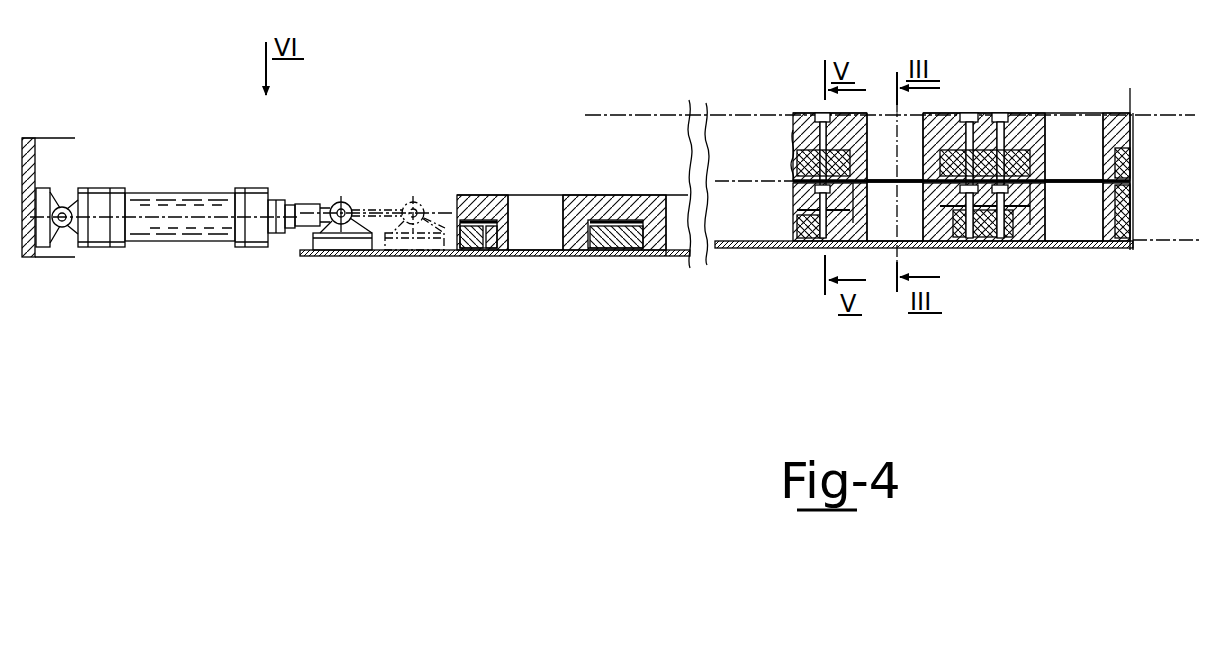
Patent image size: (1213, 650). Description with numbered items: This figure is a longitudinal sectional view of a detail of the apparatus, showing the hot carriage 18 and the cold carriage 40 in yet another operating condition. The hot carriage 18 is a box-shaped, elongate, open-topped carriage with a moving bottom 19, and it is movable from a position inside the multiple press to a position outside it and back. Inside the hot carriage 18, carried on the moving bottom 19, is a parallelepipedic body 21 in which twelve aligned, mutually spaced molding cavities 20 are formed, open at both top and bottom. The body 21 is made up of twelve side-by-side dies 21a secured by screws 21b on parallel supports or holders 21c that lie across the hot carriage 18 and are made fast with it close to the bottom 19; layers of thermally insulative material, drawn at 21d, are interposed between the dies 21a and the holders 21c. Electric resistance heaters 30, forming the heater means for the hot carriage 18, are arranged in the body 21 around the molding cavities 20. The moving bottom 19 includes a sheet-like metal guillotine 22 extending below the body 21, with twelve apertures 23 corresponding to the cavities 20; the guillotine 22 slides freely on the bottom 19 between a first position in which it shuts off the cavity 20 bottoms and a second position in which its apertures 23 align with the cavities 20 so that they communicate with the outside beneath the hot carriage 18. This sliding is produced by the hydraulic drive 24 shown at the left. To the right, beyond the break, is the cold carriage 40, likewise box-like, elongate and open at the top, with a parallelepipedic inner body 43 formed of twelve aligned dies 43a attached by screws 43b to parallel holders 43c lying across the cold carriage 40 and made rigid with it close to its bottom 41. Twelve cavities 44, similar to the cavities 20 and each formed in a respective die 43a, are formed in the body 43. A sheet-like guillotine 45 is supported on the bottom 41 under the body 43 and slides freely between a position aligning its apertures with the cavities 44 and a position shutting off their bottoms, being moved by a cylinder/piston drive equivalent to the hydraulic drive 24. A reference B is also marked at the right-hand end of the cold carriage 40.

The hot carriage 18 is at (36, 160).
The moving bottom 19 is at (74, 264).
The molding cavities 20 is at (518, 207).
The parallelepipedic body 21 is at (460, 192).
The dies 21a is at (578, 195).
The screws 21b is at (815, 244).
The parallel supports 21c is at (465, 256).
The clamping strip 21d is at (598, 221).
The guillotine 22 is at (371, 260).
The apertures 23 is at (455, 258).
The hydraulic drive 24 is at (188, 242).
The electric resistance heaters 30 is at (858, 215).
The cold carriage 40 is at (1148, 128).
The bottom of the cold carriage 41 is at (1133, 190).
The parallelepipedic inner body 43 is at (1134, 120).
The dies 43a is at (830, 113).
The screws 43b is at (793, 133).
The parallel holders 43c is at (793, 167).
The cavities 44 is at (1068, 128).
The guillotine 45 is at (1077, 182).
The direction B is at (1170, 246).